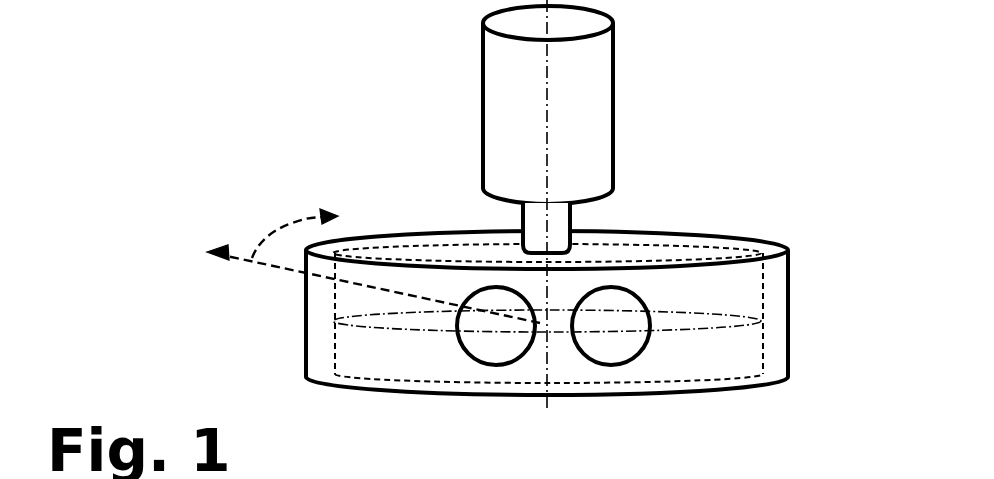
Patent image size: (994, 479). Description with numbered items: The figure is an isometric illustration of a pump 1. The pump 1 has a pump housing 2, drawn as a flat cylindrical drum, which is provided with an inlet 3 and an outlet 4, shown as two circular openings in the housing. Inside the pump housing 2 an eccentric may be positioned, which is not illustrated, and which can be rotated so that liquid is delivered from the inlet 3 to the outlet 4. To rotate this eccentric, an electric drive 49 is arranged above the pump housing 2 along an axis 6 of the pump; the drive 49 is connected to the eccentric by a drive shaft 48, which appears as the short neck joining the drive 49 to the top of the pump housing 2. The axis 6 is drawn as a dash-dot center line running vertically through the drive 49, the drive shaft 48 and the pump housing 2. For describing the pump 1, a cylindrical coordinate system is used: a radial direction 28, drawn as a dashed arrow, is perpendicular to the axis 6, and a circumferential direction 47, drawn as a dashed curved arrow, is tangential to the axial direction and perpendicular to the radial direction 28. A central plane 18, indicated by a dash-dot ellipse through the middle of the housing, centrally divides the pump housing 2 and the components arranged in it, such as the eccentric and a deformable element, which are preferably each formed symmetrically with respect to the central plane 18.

The pump 1 is at (369, 111).
The pump housing 2 is at (482, 352).
The inlet 3 is at (470, 356).
The outlet 4 is at (636, 356).
The axis 6 is at (621, 105).
The central plane 18 is at (722, 330).
The radial direction 28 is at (232, 256).
The circumferential direction 47 is at (292, 222).
The drive shaft 48 is at (570, 218).
The drive 49 is at (613, 146).